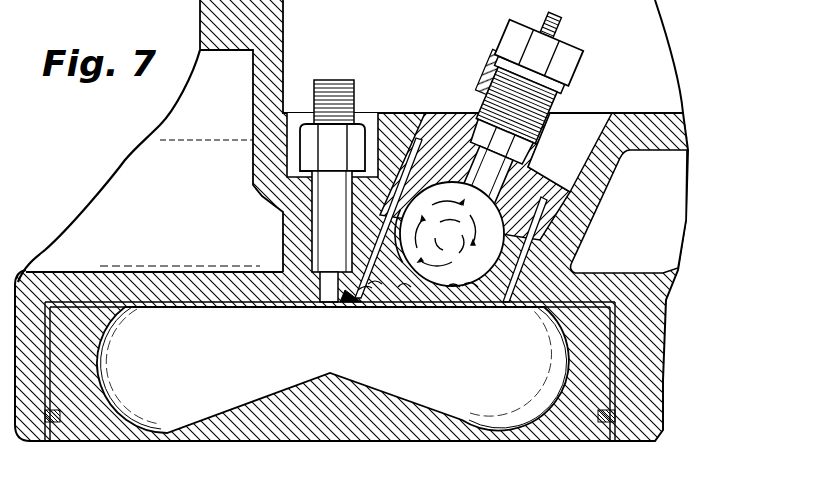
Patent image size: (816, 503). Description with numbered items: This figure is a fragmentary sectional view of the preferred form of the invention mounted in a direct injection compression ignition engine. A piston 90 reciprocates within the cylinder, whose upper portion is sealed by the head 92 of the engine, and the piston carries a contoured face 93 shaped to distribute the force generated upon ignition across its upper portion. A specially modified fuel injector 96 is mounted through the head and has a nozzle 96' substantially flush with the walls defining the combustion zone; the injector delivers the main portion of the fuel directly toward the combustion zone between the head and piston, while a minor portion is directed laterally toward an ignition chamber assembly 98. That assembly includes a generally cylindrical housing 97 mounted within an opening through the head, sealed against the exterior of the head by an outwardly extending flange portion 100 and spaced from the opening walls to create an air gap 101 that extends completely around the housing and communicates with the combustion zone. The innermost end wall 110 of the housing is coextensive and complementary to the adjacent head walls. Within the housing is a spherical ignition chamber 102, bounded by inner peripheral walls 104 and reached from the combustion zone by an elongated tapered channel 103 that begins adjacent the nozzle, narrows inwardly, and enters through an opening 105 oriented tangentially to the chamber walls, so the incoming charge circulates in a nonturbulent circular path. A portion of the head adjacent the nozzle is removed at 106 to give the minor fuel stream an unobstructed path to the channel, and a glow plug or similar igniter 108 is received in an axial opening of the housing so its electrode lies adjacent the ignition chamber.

The piston 90 is at (604, 360).
The head 92 is at (144, 272).
The contoured face 93 is at (400, 400).
The fuel injector 96 is at (332, 160).
The nozzle 96' is at (320, 304).
The cylindrical housing 97 is at (531, 188).
The ignition chamber assembly 98 is at (568, 100).
The flange portion 100 is at (420, 136).
The air gap 101 is at (401, 152).
The ignition chamber 102 is at (462, 238).
The elongated tapered channel 103 is at (373, 284).
The inner peripheral walls 104 is at (467, 286).
The opening 105 is at (405, 287).
The removed portion of the head 106 is at (360, 290).
The glow plug or igniter 108 is at (515, 45).
The end wall 110 is at (454, 287).